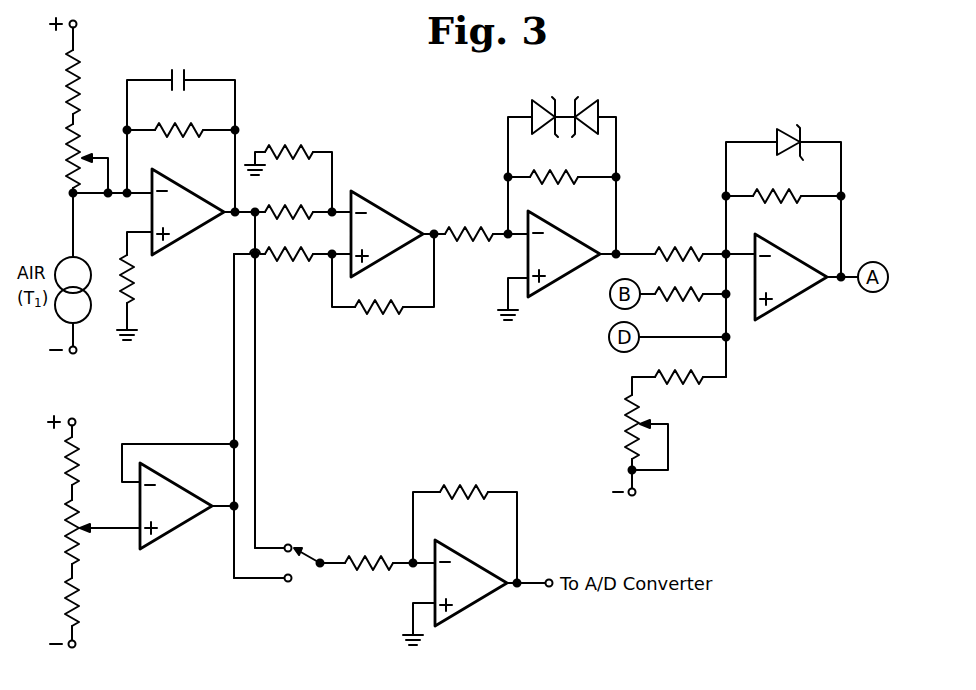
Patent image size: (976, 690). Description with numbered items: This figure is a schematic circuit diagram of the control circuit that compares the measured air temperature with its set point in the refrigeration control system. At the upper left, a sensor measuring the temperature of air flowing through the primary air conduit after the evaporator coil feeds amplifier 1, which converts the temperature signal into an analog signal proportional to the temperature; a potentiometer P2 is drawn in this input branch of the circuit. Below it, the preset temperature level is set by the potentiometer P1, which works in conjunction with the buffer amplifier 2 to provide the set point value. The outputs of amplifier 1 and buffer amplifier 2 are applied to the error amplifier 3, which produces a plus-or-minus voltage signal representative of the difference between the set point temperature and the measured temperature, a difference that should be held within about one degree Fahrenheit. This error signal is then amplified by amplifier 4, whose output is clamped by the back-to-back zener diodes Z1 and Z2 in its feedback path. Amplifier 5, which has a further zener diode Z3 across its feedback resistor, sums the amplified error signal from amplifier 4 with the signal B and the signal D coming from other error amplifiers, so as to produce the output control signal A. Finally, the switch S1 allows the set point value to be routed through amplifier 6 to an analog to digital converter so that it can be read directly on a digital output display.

The amplifier A1 1 is at (188, 212).
The buffer amplifier A2 2 is at (176, 506).
The error amplifier A3 3 is at (387, 234).
The amplifier A4 4 is at (564, 254).
The amplifier A5 5 is at (791, 277).
The amplifier A6 6 is at (471, 583).
The potentiometer P1 is at (76, 532).
The calibration potentiometer P2 is at (72, 105).
The zener diode Z1 is at (538, 106).
The zener diode Z2 is at (585, 106).
The zener diode Z3 is at (790, 131).
The switch S1 is at (309, 544).